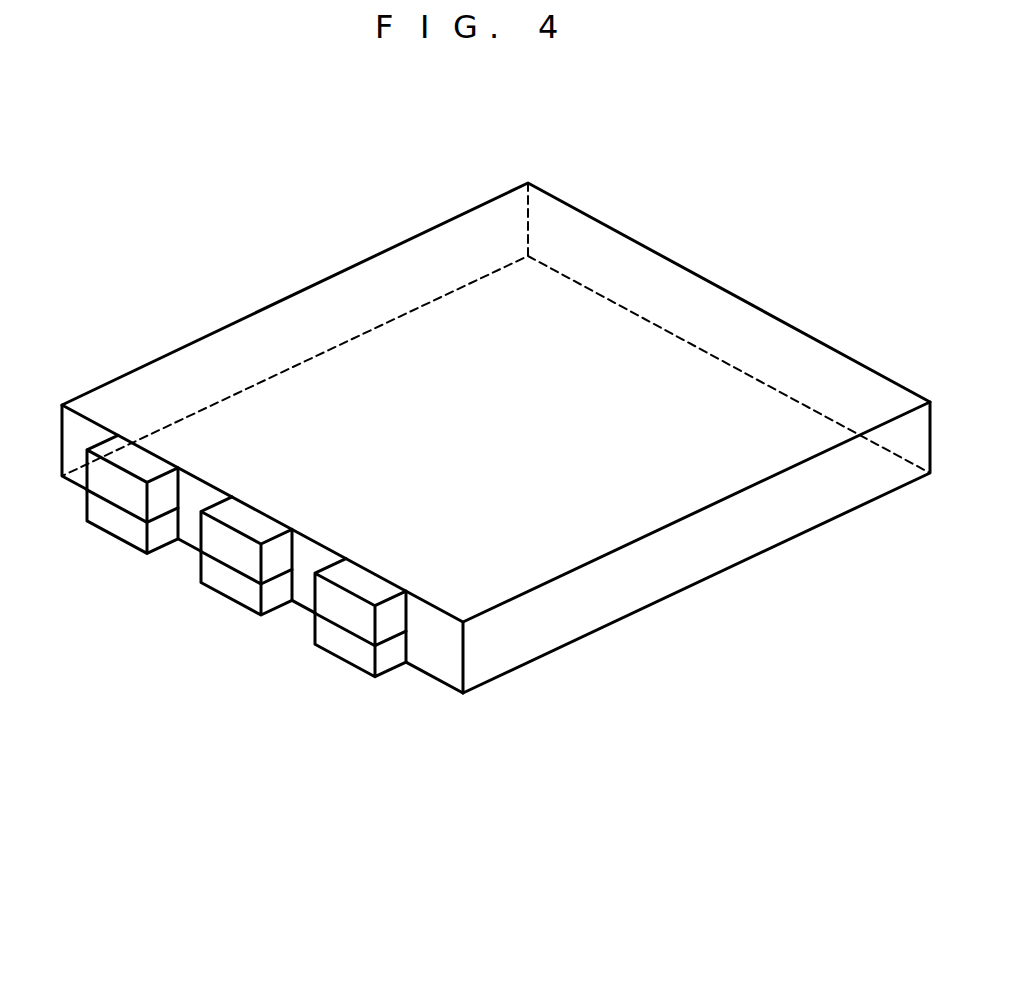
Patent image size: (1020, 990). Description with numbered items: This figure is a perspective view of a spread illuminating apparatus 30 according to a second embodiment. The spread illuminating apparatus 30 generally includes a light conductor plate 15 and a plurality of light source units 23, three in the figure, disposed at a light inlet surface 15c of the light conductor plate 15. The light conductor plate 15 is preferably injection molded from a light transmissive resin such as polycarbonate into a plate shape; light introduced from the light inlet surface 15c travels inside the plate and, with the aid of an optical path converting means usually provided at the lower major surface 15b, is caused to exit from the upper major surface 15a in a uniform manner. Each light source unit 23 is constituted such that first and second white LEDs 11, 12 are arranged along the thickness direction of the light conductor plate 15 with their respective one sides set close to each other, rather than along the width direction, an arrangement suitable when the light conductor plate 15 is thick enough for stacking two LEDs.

The first white LED 11 is at (121, 488).
The second white LED 12 is at (135, 523).
The light conductor plate 15 is at (496, 503).
The upper major surface 15a is at (570, 537).
The lower major surface 15b is at (322, 387).
The light inlet surface 15c is at (432, 648).
The light source unit 23 is at (222, 605).
The spread illuminating apparatus 30 is at (370, 779).